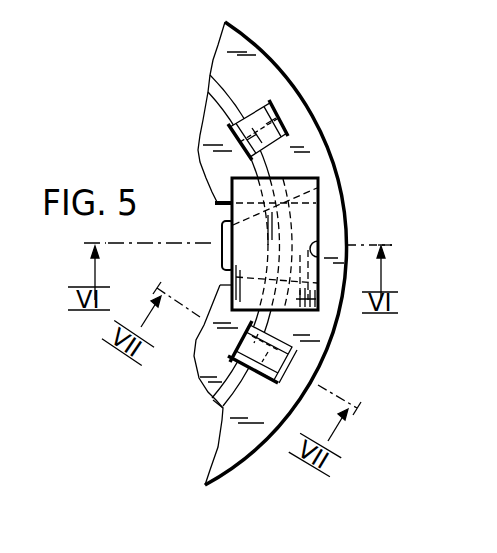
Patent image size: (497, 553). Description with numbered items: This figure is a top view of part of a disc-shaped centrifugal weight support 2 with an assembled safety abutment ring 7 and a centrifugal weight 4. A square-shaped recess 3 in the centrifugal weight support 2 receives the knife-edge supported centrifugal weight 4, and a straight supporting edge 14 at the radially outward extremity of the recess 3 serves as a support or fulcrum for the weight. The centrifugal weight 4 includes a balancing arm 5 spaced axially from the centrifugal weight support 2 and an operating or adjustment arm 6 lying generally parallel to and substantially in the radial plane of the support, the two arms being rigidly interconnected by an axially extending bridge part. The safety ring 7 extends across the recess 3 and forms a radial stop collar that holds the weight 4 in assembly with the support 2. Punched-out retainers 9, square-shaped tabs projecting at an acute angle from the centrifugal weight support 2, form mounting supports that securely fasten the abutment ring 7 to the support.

The centrifugal weight support 2 is at (268, 72).
The recess 3 is at (225, 211).
The centrifugal weight 4 is at (336, 175).
The balancing arm 5 is at (230, 188).
The adjustment arm 6 is at (228, 266).
The safety abutment ring 7 is at (222, 92).
The retainer 9 is at (263, 128).
The supporting edge 14 is at (322, 233).